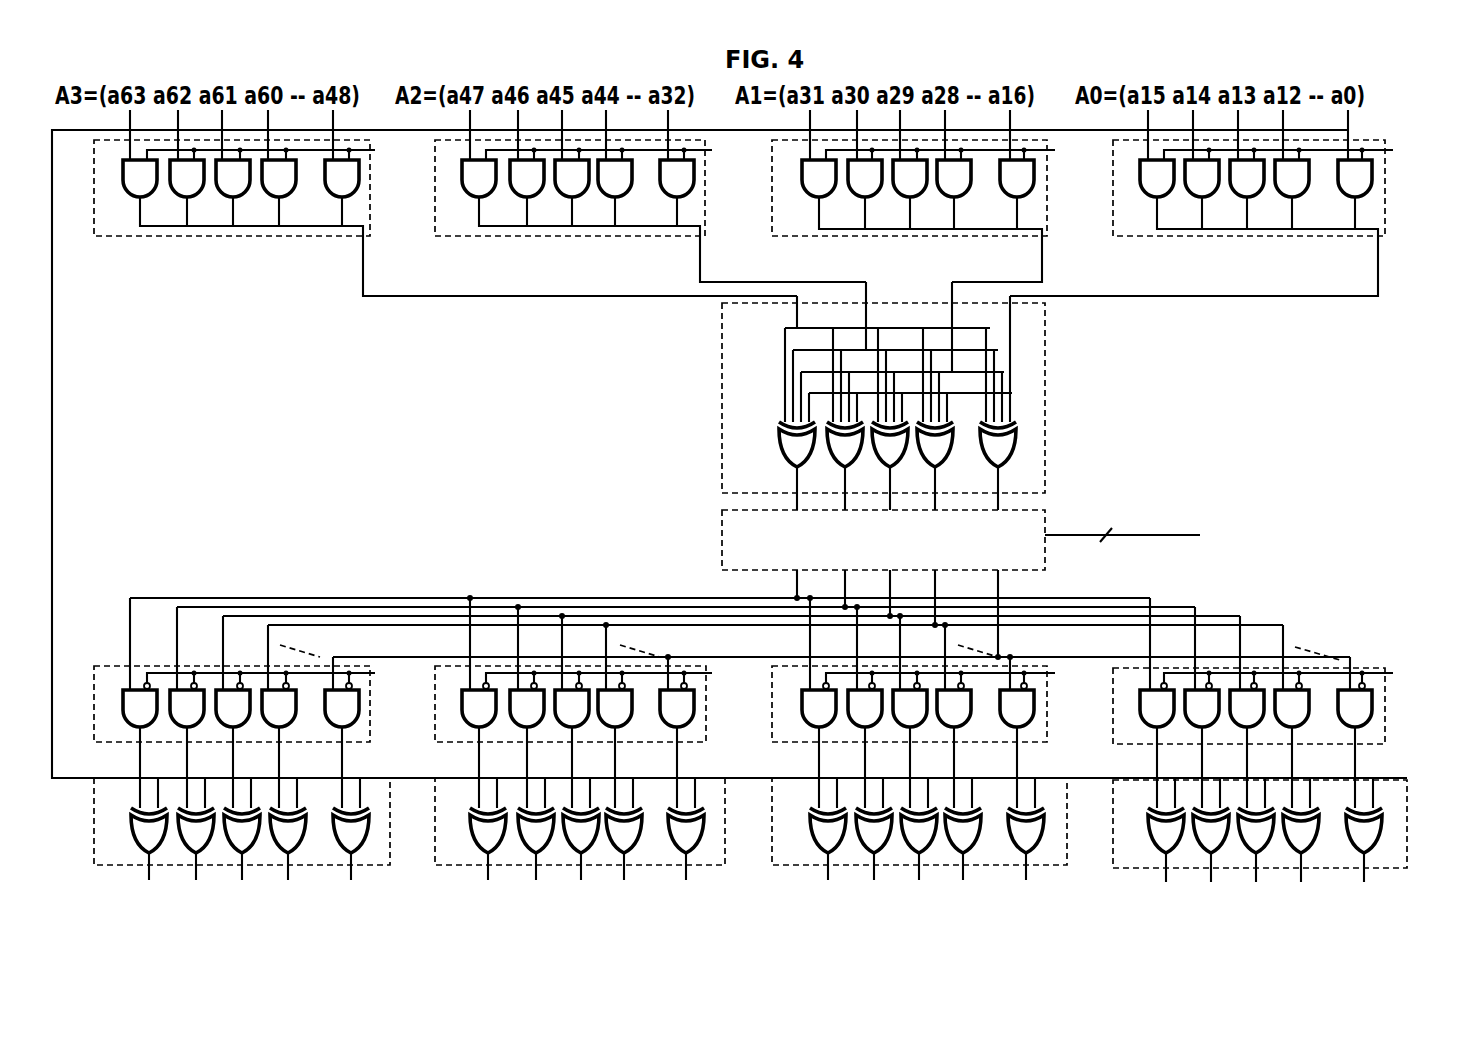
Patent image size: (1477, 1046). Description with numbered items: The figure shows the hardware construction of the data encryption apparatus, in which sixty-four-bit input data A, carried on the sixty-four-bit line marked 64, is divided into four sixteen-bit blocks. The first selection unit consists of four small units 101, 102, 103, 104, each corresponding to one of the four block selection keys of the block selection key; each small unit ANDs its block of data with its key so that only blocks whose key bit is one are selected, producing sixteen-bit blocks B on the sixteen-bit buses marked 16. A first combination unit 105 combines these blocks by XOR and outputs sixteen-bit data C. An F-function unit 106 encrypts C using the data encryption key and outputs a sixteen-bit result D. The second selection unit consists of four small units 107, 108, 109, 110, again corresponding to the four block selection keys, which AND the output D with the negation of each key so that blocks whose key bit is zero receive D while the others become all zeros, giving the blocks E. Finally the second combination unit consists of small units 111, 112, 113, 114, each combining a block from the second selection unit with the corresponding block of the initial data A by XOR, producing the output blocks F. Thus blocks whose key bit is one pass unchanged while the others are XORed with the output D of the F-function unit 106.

The small unit of the first selection unit 101 is at (1238, 217).
The small unit of the first selection unit 102 is at (964, 204).
The small unit of the first selection unit 103 is at (650, 200).
The small unit of the first selection unit 104 is at (445, 203).
The first combination unit 105 is at (927, 396).
The F-function unit 106 is at (985, 583).
The small unit of the second selection unit 107 is at (1273, 686).
The small unit of the second selection unit 108 is at (932, 684).
The small unit of the second selection unit 109 is at (591, 684).
The small unit of the second selection unit 110 is at (254, 685).
The small unit of the second combination unit 111 is at (1279, 819).
The small unit of the second combination unit 112 is at (943, 818).
The small unit of the second combination unit 113 is at (603, 818).
The small unit of the second combination unit 114 is at (261, 818).
The 16-bit bus 16 is at (1386, 260).
The 64-bit input data bus A 64 is at (46, 316).